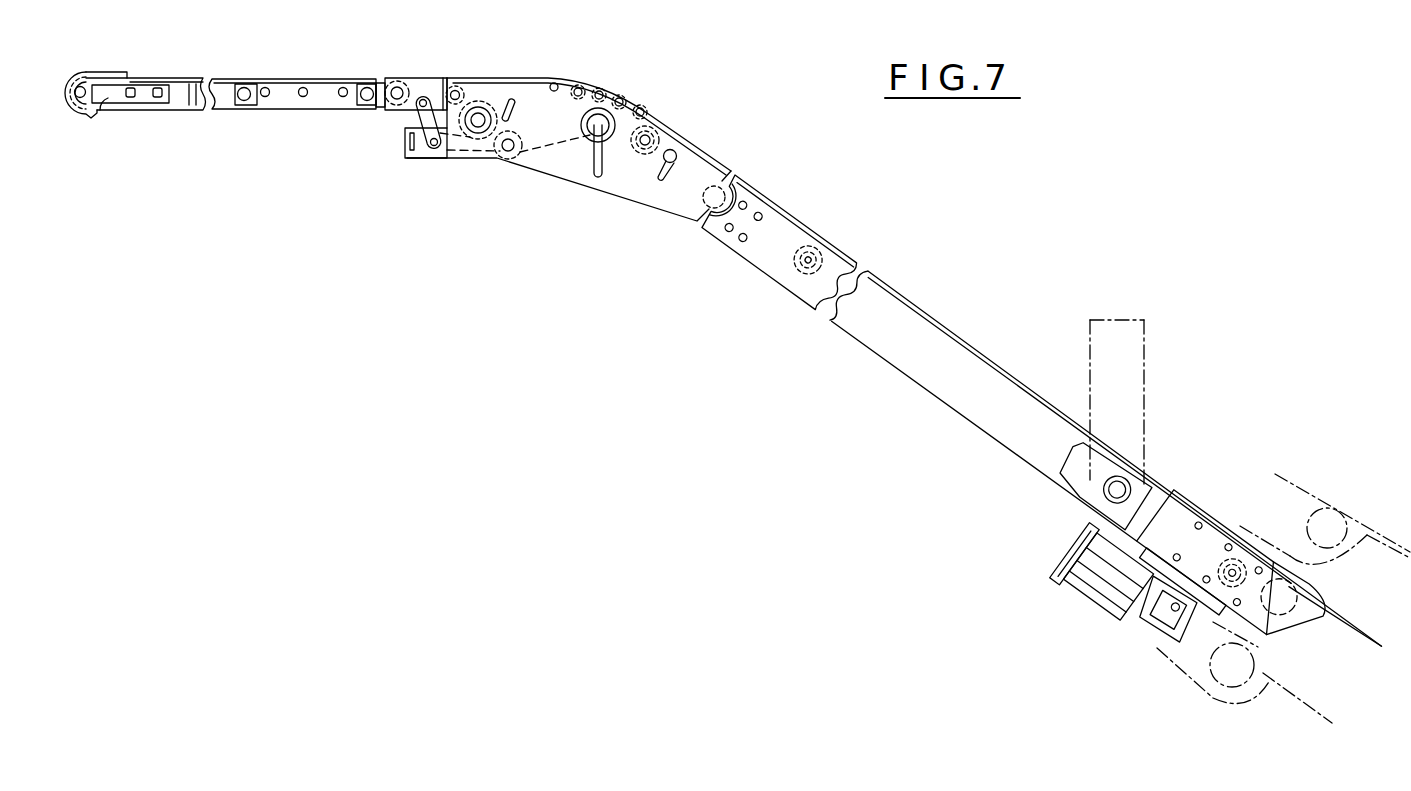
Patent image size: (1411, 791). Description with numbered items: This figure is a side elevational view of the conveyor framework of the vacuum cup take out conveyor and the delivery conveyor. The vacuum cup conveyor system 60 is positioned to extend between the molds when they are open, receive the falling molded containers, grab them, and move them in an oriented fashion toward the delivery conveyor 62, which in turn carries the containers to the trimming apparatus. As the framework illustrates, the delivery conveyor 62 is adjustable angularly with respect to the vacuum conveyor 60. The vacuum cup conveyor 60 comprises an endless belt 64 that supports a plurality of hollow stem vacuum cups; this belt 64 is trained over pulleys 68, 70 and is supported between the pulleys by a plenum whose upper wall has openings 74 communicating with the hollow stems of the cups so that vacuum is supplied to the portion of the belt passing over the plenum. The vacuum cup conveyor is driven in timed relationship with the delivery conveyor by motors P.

The vacuum cup conveyor system 60 is at (330, 72).
The delivery conveyor 62 is at (963, 327).
The endless belt 64 is at (113, 62).
The pulley 68 is at (103, 108).
The pulley 70 is at (390, 122).
The openings 74 is at (265, 105).
The motors P is at (1090, 593).